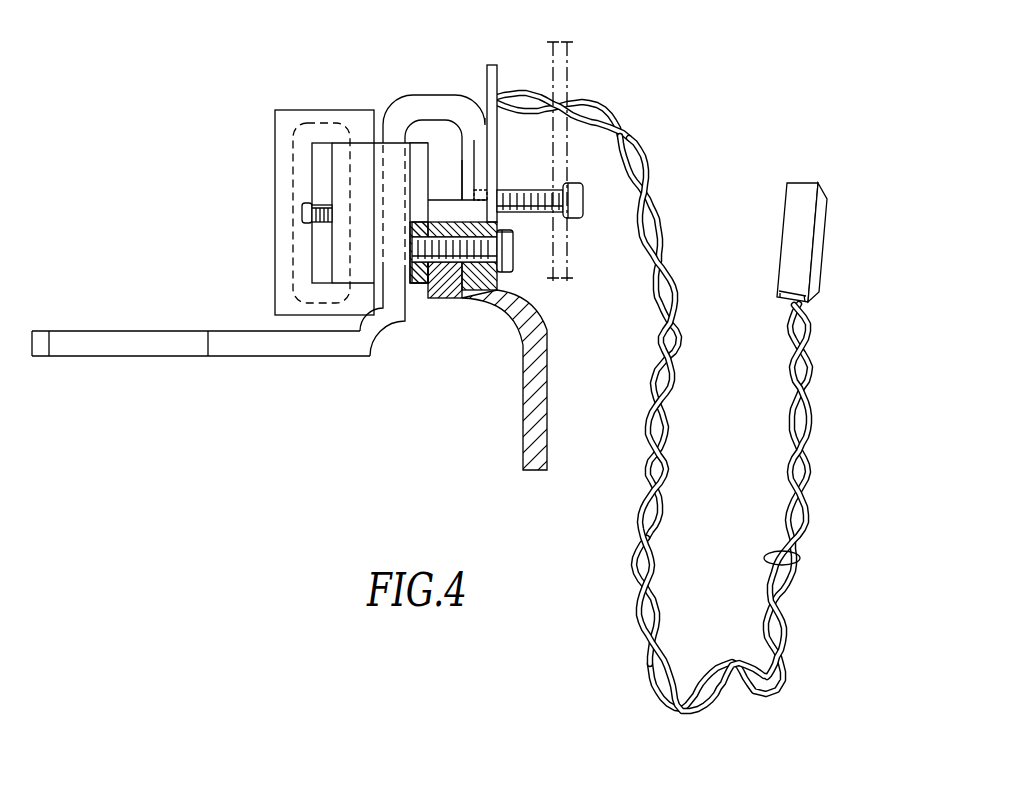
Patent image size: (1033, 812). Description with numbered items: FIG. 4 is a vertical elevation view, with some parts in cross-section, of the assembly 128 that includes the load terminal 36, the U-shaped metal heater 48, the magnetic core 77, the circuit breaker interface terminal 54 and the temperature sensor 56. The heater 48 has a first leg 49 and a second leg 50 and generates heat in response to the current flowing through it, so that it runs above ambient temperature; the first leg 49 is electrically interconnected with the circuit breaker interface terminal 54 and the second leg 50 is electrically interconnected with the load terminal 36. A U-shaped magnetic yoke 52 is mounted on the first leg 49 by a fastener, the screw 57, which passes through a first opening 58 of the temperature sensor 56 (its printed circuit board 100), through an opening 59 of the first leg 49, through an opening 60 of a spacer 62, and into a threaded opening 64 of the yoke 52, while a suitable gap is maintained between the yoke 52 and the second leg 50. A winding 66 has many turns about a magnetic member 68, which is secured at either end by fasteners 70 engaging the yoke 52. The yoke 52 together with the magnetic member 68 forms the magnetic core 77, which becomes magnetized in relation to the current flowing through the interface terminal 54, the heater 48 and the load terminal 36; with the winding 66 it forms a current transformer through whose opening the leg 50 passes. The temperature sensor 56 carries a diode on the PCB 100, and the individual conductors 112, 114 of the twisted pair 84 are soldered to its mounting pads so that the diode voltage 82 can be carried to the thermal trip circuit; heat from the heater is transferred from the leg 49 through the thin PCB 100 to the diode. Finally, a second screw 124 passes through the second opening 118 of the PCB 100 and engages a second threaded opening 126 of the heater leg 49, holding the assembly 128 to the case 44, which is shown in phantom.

The load terminal 36 is at (103, 328).
The case 44 is at (571, 262).
The U-shaped metal heater 48 is at (416, 95).
The first leg of heater 49 is at (478, 141).
The second leg of heater 50 is at (392, 295).
The U-shaped magnetic yoke 52 is at (310, 248).
The circuit breaker interface terminal 54 is at (520, 415).
The temperature sensor 56 is at (502, 74).
The screw 57 is at (503, 270).
The first opening of temperature sensor 58 is at (488, 258).
The opening of first leg 59 is at (502, 240).
The opening of spacer 60 is at (412, 232).
The spacer 62 is at (450, 298).
The threaded opening of yoke 64 is at (416, 248).
The winding 66 is at (300, 170).
The magnetic member 68 is at (320, 292).
The fasteners 70 is at (302, 214).
The magnetic core 77 is at (342, 97).
The voltage 82 is at (633, 592).
The twisted pair 84 is at (800, 560).
The printed circuit board 100 is at (490, 62).
The conductor 112 is at (789, 421).
The conductor 114 is at (817, 417).
The second opening of PCB 118 is at (512, 190).
The second screw 124 is at (585, 200).
The second threaded opening 126 is at (478, 195).
The assembly 128 is at (310, 514).